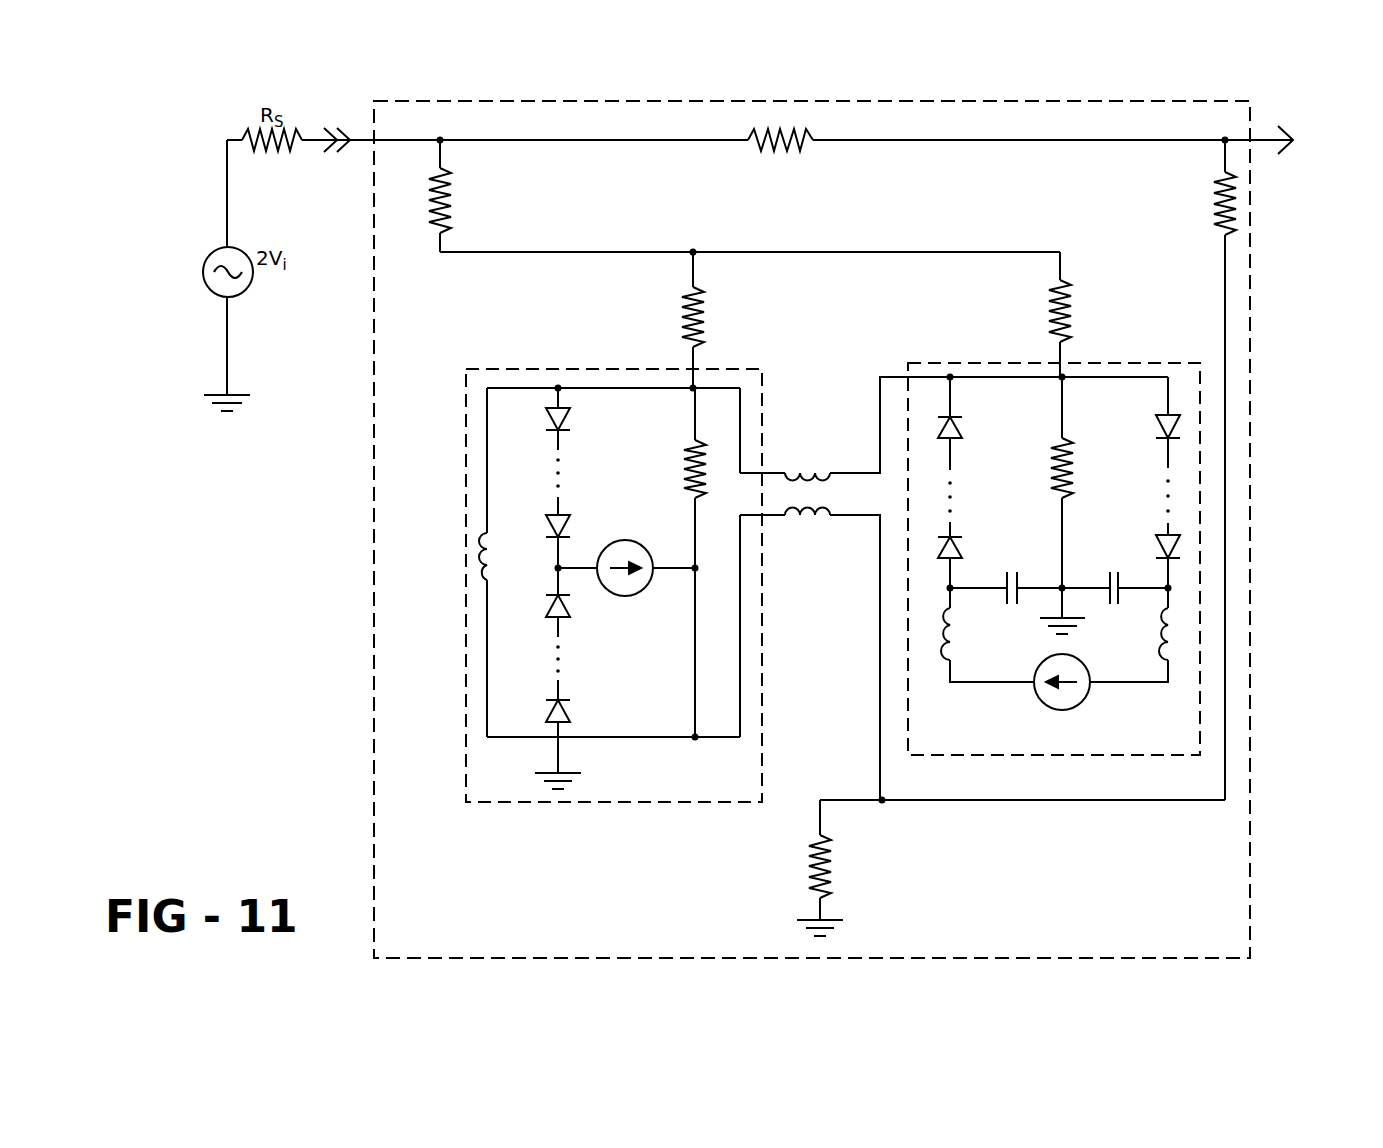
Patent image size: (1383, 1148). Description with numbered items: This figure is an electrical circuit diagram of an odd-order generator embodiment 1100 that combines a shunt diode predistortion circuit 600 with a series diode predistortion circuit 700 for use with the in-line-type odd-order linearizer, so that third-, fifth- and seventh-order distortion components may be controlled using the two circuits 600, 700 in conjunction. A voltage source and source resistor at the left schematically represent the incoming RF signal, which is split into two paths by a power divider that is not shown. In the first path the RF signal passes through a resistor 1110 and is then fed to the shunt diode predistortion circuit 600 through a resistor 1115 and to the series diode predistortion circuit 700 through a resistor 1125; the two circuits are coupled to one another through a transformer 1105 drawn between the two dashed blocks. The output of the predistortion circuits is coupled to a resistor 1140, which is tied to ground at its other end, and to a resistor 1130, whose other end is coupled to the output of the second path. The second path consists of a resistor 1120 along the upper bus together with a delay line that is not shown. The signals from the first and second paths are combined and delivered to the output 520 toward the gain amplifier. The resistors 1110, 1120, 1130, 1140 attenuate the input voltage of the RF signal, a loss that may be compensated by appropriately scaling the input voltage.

The output destination 520 is at (1281, 137).
The shunt diode predistortion circuit 600 is at (986, 362).
The series diode predistortion circuit 700 is at (466, 708).
The odd-order generator embodiment 1100 is at (1252, 870).
The transformer 1105 is at (808, 524).
The resistor 1110 is at (448, 206).
The resistor 1115 is at (1072, 325).
The resistor 1120 is at (793, 153).
The resistor 1125 is at (686, 322).
The resistor 1130 is at (1210, 205).
The resistor 1140 is at (832, 868).